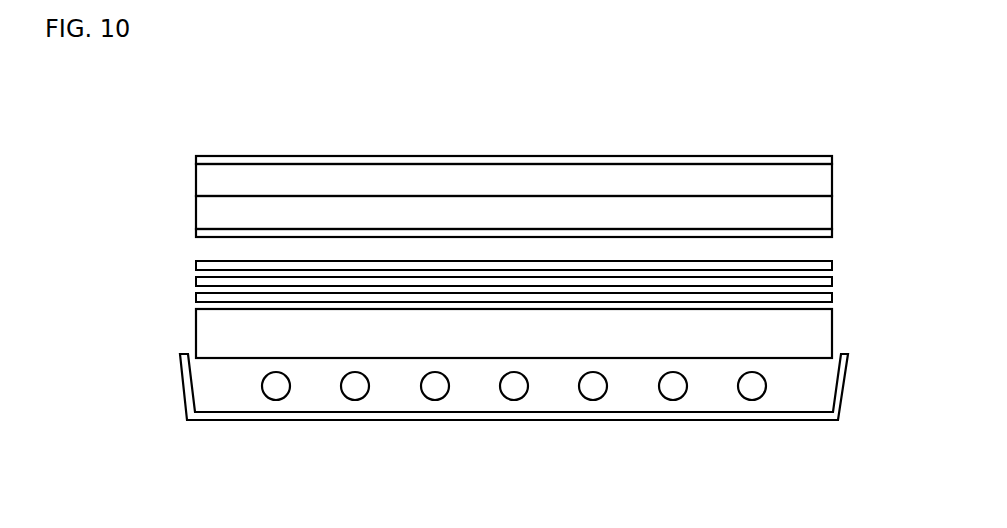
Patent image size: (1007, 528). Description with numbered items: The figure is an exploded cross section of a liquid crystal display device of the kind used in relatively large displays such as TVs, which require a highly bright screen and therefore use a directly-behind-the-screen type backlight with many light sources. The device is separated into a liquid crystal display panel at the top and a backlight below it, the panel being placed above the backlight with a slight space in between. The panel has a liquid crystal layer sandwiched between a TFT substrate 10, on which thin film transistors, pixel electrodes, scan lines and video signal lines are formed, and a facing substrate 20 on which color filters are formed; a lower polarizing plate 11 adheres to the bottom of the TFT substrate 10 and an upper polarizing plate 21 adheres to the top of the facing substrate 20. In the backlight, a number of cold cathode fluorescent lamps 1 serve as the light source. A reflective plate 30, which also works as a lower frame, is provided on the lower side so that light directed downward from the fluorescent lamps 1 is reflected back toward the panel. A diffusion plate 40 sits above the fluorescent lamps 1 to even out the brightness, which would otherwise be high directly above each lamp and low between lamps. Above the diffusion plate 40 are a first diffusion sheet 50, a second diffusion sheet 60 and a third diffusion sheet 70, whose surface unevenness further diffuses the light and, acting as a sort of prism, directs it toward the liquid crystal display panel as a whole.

The fluorescent lamp 1 is at (673, 400).
The TFT substrate 10 is at (832, 213).
The lower polarizing plate 11 is at (832, 233).
The facing substrate 20 is at (832, 182).
The upper polarizing plate 21 is at (793, 156).
The reflective plate 30 is at (757, 420).
The diffusion plate 40 is at (832, 335).
The first diffusion sheet 50 is at (196, 295).
The second diffusion sheet 60 is at (196, 283).
The third diffusion sheet 70 is at (196, 267).